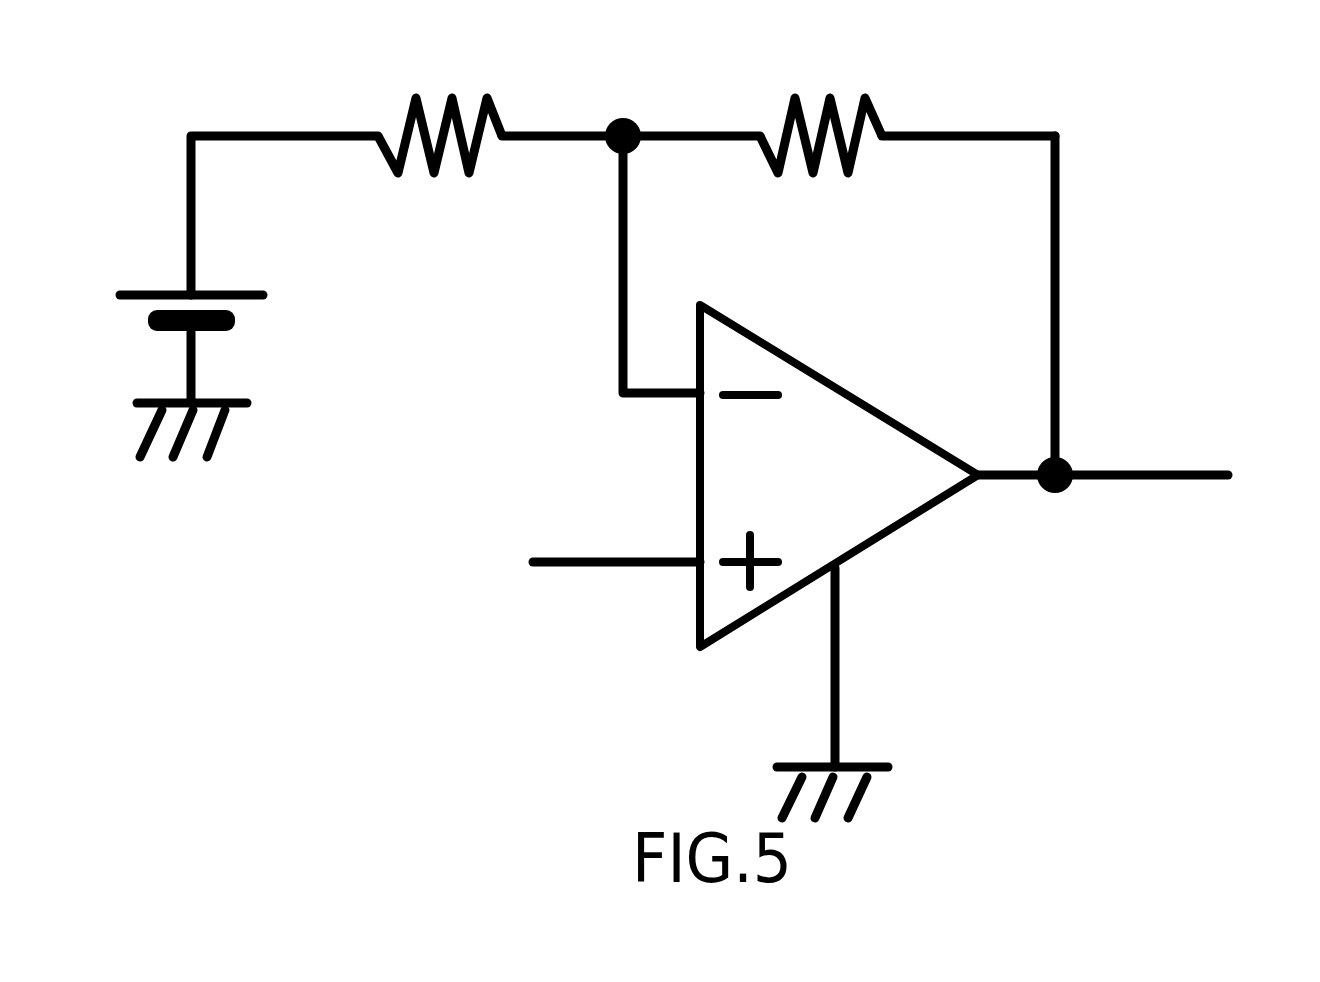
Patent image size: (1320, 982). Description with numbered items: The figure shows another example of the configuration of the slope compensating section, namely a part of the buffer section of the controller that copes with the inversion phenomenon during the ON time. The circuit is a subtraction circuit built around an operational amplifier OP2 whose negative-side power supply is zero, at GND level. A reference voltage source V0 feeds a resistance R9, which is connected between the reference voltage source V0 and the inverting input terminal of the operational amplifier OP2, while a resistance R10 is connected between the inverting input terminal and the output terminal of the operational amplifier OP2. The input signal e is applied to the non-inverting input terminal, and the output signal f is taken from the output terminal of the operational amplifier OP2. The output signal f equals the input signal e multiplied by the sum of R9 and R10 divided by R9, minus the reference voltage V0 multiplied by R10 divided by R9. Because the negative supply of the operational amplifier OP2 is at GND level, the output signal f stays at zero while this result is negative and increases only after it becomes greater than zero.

The resistance R9 is at (440, 97).
The resistance R10 is at (821, 97).
The reference voltage source V0 is at (245, 303).
The operational amplifier OP2 is at (903, 528).
The input signal e is at (589, 561).
The output signal f is at (1171, 474).